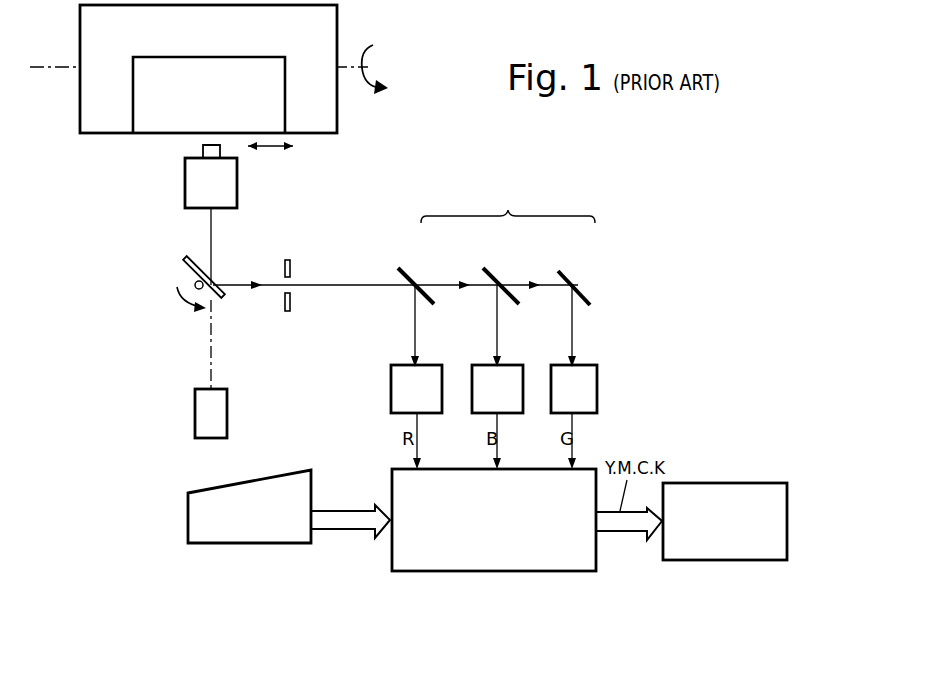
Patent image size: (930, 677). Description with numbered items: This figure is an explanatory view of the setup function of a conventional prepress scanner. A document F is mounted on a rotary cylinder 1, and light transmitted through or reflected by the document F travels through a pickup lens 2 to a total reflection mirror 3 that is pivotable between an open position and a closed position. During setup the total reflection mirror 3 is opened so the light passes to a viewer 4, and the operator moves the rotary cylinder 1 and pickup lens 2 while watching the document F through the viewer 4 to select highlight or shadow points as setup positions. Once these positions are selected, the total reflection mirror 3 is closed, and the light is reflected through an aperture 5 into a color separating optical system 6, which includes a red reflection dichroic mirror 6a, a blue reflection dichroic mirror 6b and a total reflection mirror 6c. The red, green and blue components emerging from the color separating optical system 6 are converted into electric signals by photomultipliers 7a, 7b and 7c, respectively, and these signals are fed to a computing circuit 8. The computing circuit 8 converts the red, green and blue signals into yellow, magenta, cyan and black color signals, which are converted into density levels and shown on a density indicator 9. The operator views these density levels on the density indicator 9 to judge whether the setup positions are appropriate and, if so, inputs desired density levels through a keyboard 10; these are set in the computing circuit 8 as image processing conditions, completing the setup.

The rotary cylinder 1 is at (338, 28).
The document F is at (267, 57).
The pickup lens 2 is at (238, 190).
The total reflection mirror 3 is at (195, 258).
The viewer 4 is at (200, 410).
The aperture 5 is at (292, 264).
The color separating optical system 6 is at (496, 277).
The red reflection dichroic mirror 6a is at (416, 276).
The blue reflection dichroic mirror 6b is at (492, 277).
The total reflection mirror 6c is at (566, 277).
The photomultiplier 7a is at (393, 380).
The photomultiplier 7b is at (487, 366).
The photomultiplier 7c is at (585, 376).
The computing circuit 8 is at (391, 479).
The density indicator 9 is at (740, 485).
The keyboard 10 is at (188, 513).